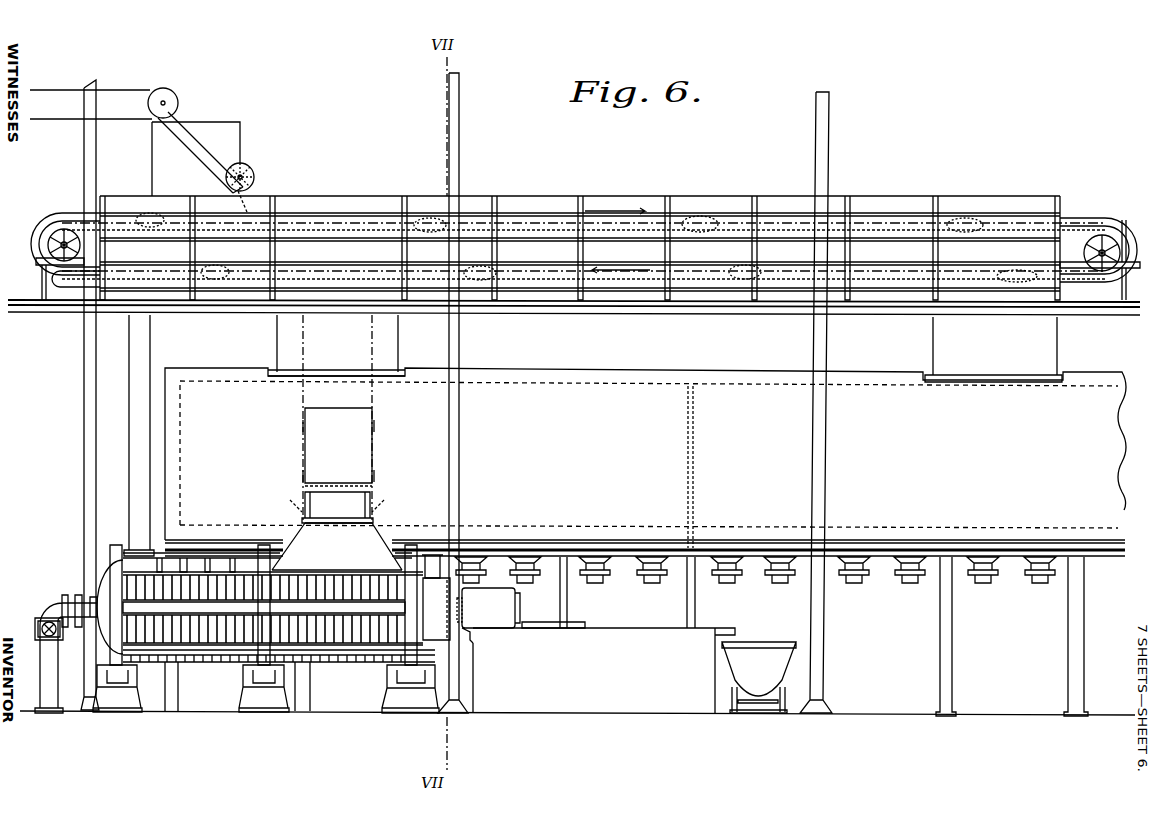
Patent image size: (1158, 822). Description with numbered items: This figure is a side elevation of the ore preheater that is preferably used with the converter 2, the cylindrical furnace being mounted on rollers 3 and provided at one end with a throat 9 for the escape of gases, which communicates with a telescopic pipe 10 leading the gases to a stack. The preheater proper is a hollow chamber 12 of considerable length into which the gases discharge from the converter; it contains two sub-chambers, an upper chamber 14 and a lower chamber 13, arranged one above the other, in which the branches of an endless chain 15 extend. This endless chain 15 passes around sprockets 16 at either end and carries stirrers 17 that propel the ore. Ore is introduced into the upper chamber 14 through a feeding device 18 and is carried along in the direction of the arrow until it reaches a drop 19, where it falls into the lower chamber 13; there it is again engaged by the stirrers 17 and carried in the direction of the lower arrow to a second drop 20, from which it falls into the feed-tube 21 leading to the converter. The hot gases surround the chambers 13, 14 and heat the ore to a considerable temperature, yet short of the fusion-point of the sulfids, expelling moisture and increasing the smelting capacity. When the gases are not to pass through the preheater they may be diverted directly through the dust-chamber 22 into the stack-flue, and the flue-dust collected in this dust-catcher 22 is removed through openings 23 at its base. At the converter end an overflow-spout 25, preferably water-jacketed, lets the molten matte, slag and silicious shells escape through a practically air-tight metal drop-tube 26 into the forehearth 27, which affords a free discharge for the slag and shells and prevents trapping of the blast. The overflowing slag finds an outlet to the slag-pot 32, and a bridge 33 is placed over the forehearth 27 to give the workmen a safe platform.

The converter 2 is at (242, 629).
The rollers 3 is at (257, 670).
The throat 9 is at (337, 546).
The telescopic pipe 10 is at (337, 465).
The hollow chamber 12 is at (580, 254).
The lower sub-chamber 13 is at (535, 272).
The upper sub-chamber 14 is at (538, 217).
The endless chain 15 is at (583, 216).
The sprockets 16 is at (61, 230).
The stirrers 17 is at (732, 268).
The feeding device 18 is at (240, 171).
The drop 19 is at (1053, 225).
The second drop 20 is at (142, 277).
The feed-tube 21 is at (161, 333).
The dust-chamber 22 is at (645, 462).
The openings 23 is at (780, 580).
The overflow-spout 25 is at (465, 603).
The drop-tube 26 is at (491, 615).
The forehearth 27 is at (604, 670).
The slag-pot 32 is at (759, 677).
The bridge 33 is at (584, 620).